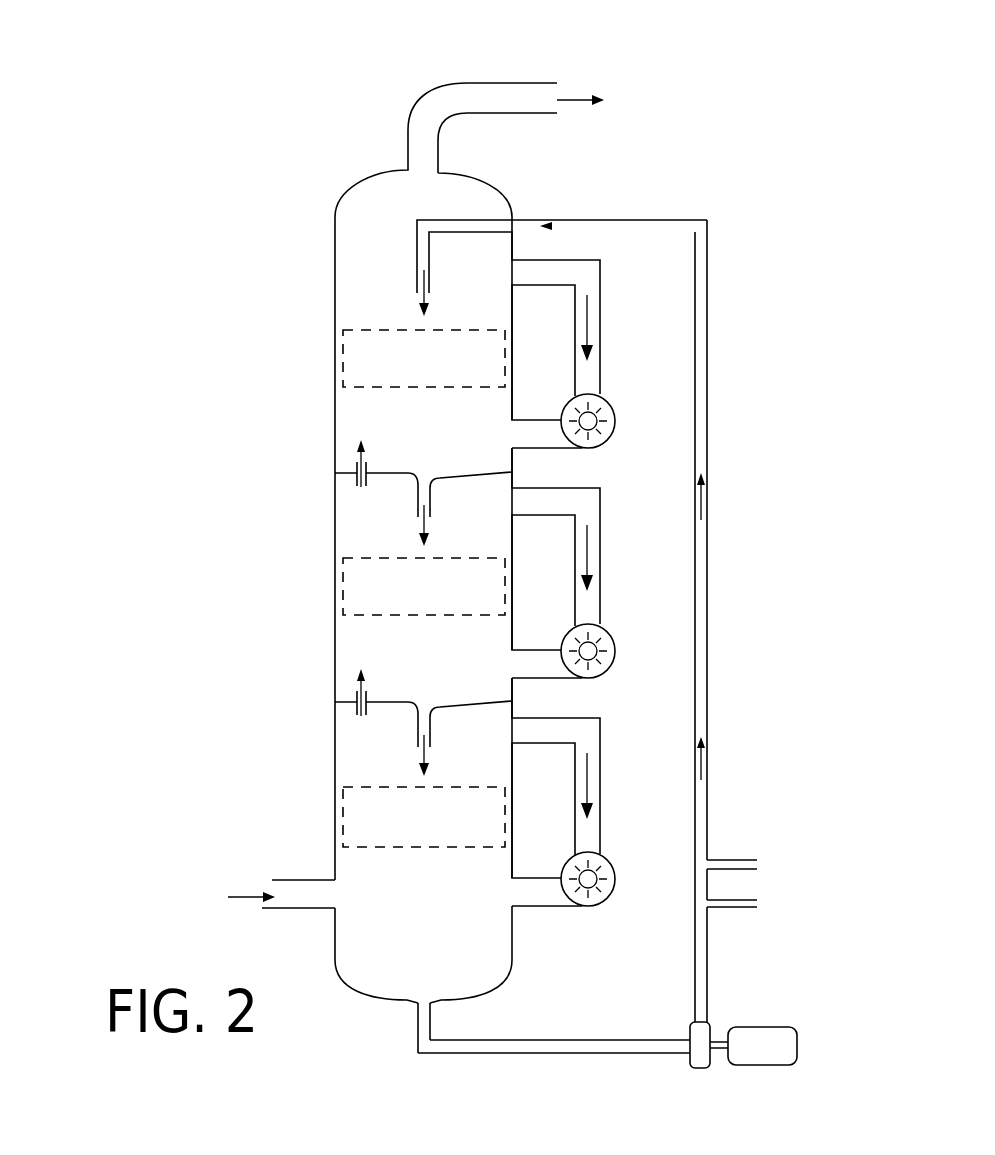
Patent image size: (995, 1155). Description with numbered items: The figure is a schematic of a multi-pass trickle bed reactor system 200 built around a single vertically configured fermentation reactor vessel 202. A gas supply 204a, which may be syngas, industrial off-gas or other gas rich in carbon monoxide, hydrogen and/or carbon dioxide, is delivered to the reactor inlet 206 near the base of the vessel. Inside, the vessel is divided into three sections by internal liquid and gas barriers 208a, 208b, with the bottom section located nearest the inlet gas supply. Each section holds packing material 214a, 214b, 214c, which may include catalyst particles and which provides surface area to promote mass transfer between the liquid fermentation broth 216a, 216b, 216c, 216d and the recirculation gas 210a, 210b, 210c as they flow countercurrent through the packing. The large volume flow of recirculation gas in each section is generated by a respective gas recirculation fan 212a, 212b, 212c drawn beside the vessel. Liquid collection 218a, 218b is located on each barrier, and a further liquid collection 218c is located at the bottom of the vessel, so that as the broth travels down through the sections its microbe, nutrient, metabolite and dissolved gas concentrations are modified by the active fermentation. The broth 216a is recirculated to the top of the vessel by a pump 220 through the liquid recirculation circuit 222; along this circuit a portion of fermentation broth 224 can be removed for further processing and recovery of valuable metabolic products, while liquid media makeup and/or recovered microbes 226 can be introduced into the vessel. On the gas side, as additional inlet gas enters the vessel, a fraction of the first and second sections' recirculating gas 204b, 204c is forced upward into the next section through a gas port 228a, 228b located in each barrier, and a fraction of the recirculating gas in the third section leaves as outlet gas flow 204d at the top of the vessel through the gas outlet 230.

The MP-TBR system 200 is at (212, 98).
The fermentation reactor vessel 202 is at (348, 196).
The gas supply 204a is at (243, 893).
The recirculating gas of the first section 204b is at (357, 677).
The recirculating gas of the second section 204c is at (357, 447).
The outlet gas flow 204d is at (576, 103).
The reactor inlet 206 is at (303, 878).
The internal liquid and gas barrier 208a is at (490, 470).
The internal liquid and gas barrier 208b is at (490, 700).
The recirculation gas 210a is at (592, 330).
The recirculation gas 210b is at (592, 560).
The recirculation gas 210c is at (592, 790).
The gas recirculation fan 212a is at (593, 440).
The gas recirculation fan 212b is at (593, 670).
The gas recirculation fan 212c is at (593, 898).
The packing material 214a is at (445, 387).
The packing material 214b is at (445, 615).
The packing material 214c is at (445, 847).
The liquid fermentation broth 216a is at (568, 222).
The liquid fermentation broth 216b is at (423, 533).
The liquid fermentation broth 216c is at (423, 763).
The liquid fermentation broth 216d is at (565, 1040).
The liquid collection 218a is at (433, 482).
The liquid collection 218b is at (433, 712).
The liquid collection 218c is at (435, 1005).
The pump 220 is at (703, 1040).
The liquid recirculation circuit 222 is at (707, 620).
The removed portion of fermentation broth 224 is at (790, 865).
The liquid media makeup and/or recovered microbes 226 is at (792, 903).
The gas port 228a is at (353, 468).
The gas port 228b is at (353, 697).
The gas outlet 230 is at (540, 83).